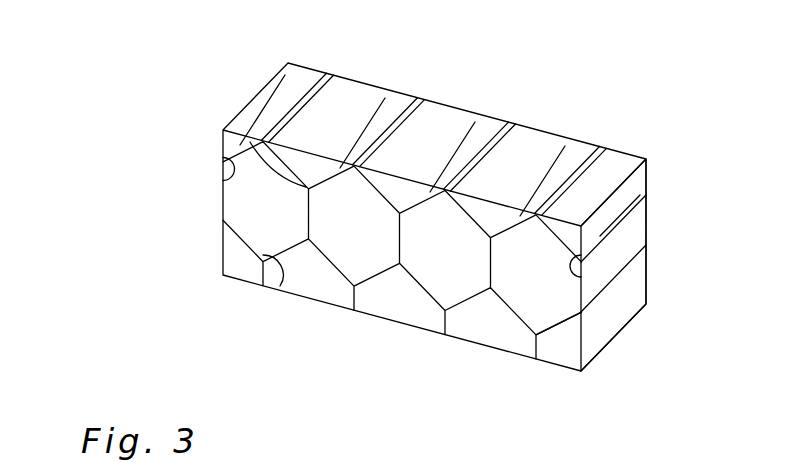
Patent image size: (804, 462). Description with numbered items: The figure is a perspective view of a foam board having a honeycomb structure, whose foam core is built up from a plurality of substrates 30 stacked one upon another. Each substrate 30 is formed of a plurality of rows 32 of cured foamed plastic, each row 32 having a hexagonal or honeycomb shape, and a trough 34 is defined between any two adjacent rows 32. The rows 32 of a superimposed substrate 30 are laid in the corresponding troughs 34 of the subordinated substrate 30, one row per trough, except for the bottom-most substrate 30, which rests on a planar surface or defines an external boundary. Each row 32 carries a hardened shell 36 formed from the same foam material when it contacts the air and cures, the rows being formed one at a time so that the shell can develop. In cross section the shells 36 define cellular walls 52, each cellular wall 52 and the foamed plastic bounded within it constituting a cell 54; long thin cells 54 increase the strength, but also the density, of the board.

The substrate 30 is at (222, 140).
The row 32 is at (272, 98).
The trough 34 is at (309, 186).
The hardened shell 36 is at (337, 167).
The cellular wall 52 is at (581, 277).
The cell 54 is at (557, 302).